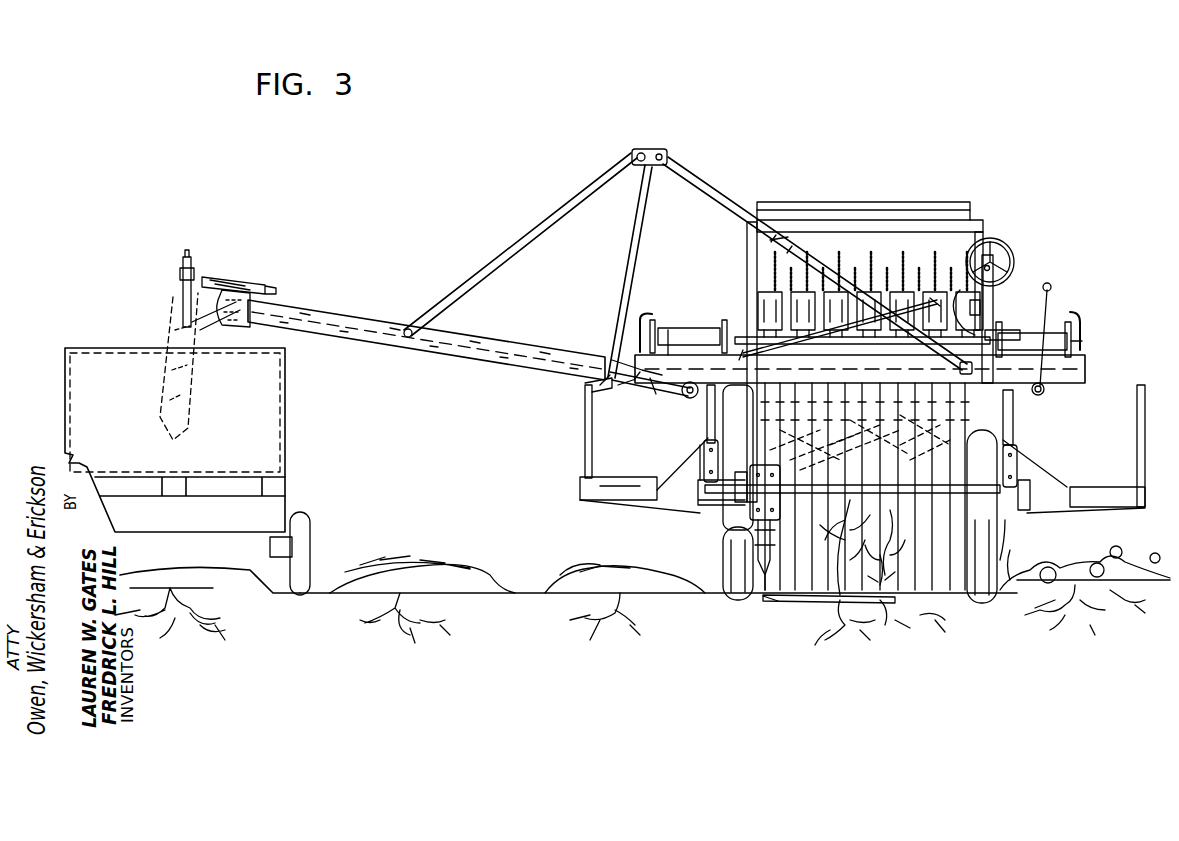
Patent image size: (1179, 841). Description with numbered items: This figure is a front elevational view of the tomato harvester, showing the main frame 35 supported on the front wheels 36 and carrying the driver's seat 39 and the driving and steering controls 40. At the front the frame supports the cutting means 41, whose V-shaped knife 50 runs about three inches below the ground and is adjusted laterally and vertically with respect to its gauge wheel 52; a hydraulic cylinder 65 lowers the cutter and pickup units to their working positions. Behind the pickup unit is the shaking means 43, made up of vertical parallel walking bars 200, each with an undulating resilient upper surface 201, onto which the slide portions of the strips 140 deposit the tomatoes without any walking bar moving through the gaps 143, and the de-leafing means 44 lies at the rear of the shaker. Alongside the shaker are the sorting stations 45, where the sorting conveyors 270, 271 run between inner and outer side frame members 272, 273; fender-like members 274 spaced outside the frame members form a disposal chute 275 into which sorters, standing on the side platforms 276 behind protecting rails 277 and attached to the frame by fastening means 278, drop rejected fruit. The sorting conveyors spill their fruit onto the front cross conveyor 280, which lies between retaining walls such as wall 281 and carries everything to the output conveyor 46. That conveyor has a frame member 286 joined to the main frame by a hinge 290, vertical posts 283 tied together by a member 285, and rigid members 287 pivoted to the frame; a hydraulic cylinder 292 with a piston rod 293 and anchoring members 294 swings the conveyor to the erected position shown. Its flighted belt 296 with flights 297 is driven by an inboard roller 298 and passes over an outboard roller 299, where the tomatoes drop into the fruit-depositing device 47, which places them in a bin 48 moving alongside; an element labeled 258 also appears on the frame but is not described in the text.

The main frame 35 is at (702, 434).
The front wheels 36 is at (724, 595).
The driver's seat 39 is at (994, 278).
The driving and steering controls 40 is at (1075, 276).
The cutting means 41 is at (780, 610).
The shaking means 43 is at (894, 237).
The de-leafing means 44 is at (900, 592).
The sorting stations 45 is at (1058, 328).
The output conveyor 46 is at (448, 375).
The fruit-depositing device 47 is at (112, 328).
The bin 48 is at (285, 406).
The V-shaped knife 50 is at (818, 601).
The gauge wheel 52 is at (750, 598).
The hydraulic cylinder 65 is at (716, 461).
The strips 140 is at (910, 276).
The gaps 143 is at (800, 314).
The walking bars 200 is at (853, 274).
The undulating resilient upper surface 201 is at (822, 270).
The top rail 258 is at (860, 202).
The sorting conveyor 270 is at (1009, 334).
The sorting conveyor 271 is at (710, 337).
The side frame member 272 is at (1032, 342).
The side frame member 273 is at (1073, 343).
The fender-like member 274 is at (1083, 318).
The disposal chute 275 is at (1046, 389).
The side platforms 276 is at (585, 497).
The protecting rails 277 is at (585, 461).
The fastening means 278 is at (1060, 490).
The front cross conveyor 280 is at (858, 358).
The retaining wall 281 is at (872, 384).
The vertical post 283 is at (649, 264).
The member 285 is at (668, 152).
The frame member 286 is at (410, 356).
The rigid members 287 is at (500, 257).
The hinge 290 is at (668, 332).
The cylinder 292 is at (790, 240).
The piston rod 293 is at (731, 206).
The anchoring members 294 is at (962, 364).
The flighted belt 296 is at (336, 314).
The flights 297 is at (464, 336).
The roller 298 is at (632, 392).
The roller 299 is at (232, 330).